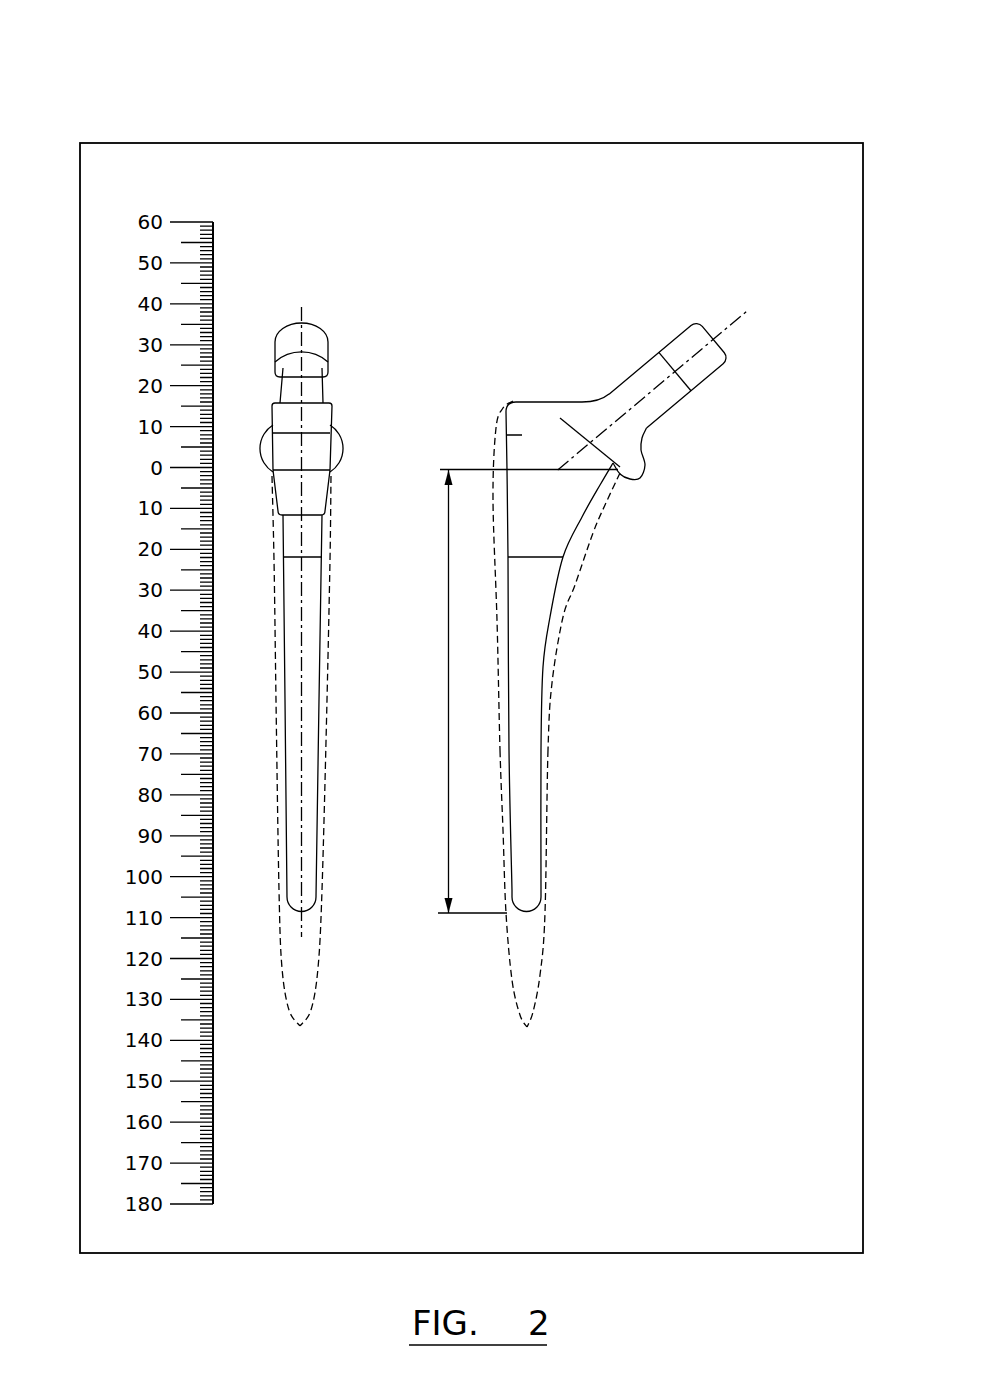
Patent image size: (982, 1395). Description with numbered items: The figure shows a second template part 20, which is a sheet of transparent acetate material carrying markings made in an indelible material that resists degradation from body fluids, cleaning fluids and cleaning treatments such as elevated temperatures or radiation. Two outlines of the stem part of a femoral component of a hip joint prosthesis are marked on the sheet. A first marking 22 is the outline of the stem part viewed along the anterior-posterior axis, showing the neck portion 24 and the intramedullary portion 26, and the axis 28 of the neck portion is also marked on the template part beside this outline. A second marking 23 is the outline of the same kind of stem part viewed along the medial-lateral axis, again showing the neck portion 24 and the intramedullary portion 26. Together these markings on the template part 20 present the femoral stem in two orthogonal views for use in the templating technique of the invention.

The second template part 20 is at (298, 134).
The first marking 22 is at (552, 618).
The second marking 23 is at (322, 640).
The neck portion 24 is at (312, 387).
The intramedullary portion 26 is at (309, 799).
The axis 28 is at (735, 327).